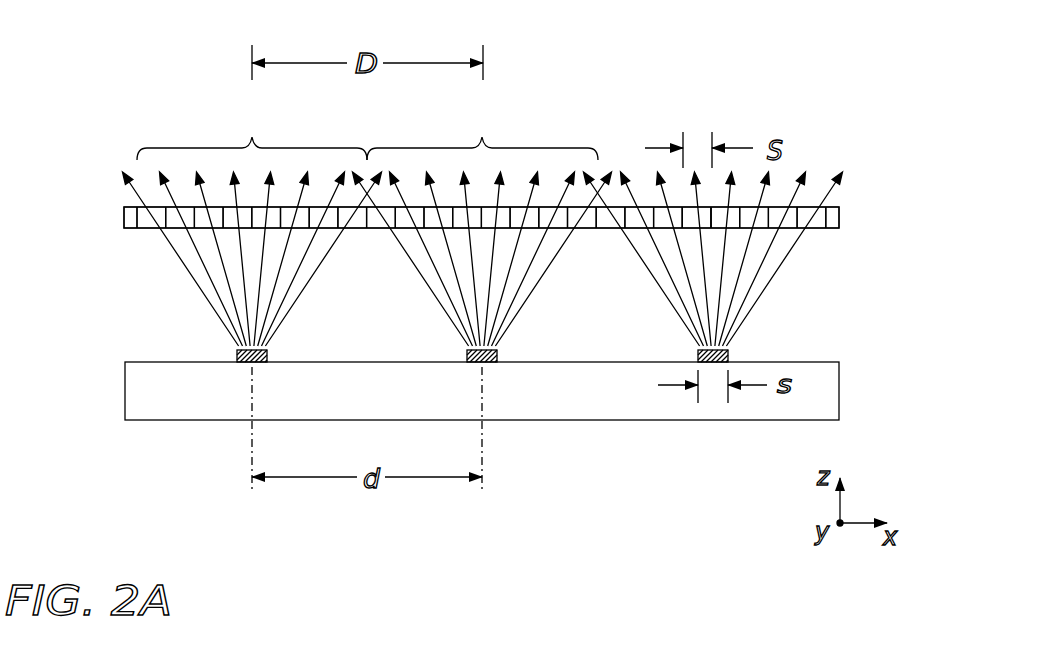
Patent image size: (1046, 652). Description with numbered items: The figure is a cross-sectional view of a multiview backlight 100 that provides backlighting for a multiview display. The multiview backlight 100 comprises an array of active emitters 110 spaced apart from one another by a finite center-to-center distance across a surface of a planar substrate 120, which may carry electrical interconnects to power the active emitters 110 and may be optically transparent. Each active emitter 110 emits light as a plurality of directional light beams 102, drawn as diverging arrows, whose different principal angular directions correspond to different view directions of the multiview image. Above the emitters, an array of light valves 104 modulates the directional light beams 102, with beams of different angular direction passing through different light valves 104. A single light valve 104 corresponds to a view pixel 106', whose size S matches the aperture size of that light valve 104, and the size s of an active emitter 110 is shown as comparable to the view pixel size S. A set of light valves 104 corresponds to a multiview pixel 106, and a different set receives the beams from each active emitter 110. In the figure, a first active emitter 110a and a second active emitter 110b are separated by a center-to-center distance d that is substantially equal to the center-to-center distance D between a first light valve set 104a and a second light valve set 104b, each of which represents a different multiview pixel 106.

The multiview backlight 100 is at (797, 45).
The directional light beams 102 is at (817, 268).
The light valves 104 is at (112, 213).
The first light valve set 104a is at (252, 132).
The second light valve set 104b is at (482, 131).
The multiview pixel 106 is at (450, 148).
The view pixel 106' is at (781, 151).
The active emitter 110 is at (737, 343).
The first active emitter 110a is at (228, 345).
The second active emitter 110b is at (492, 373).
The planar substrate 120 is at (128, 390).